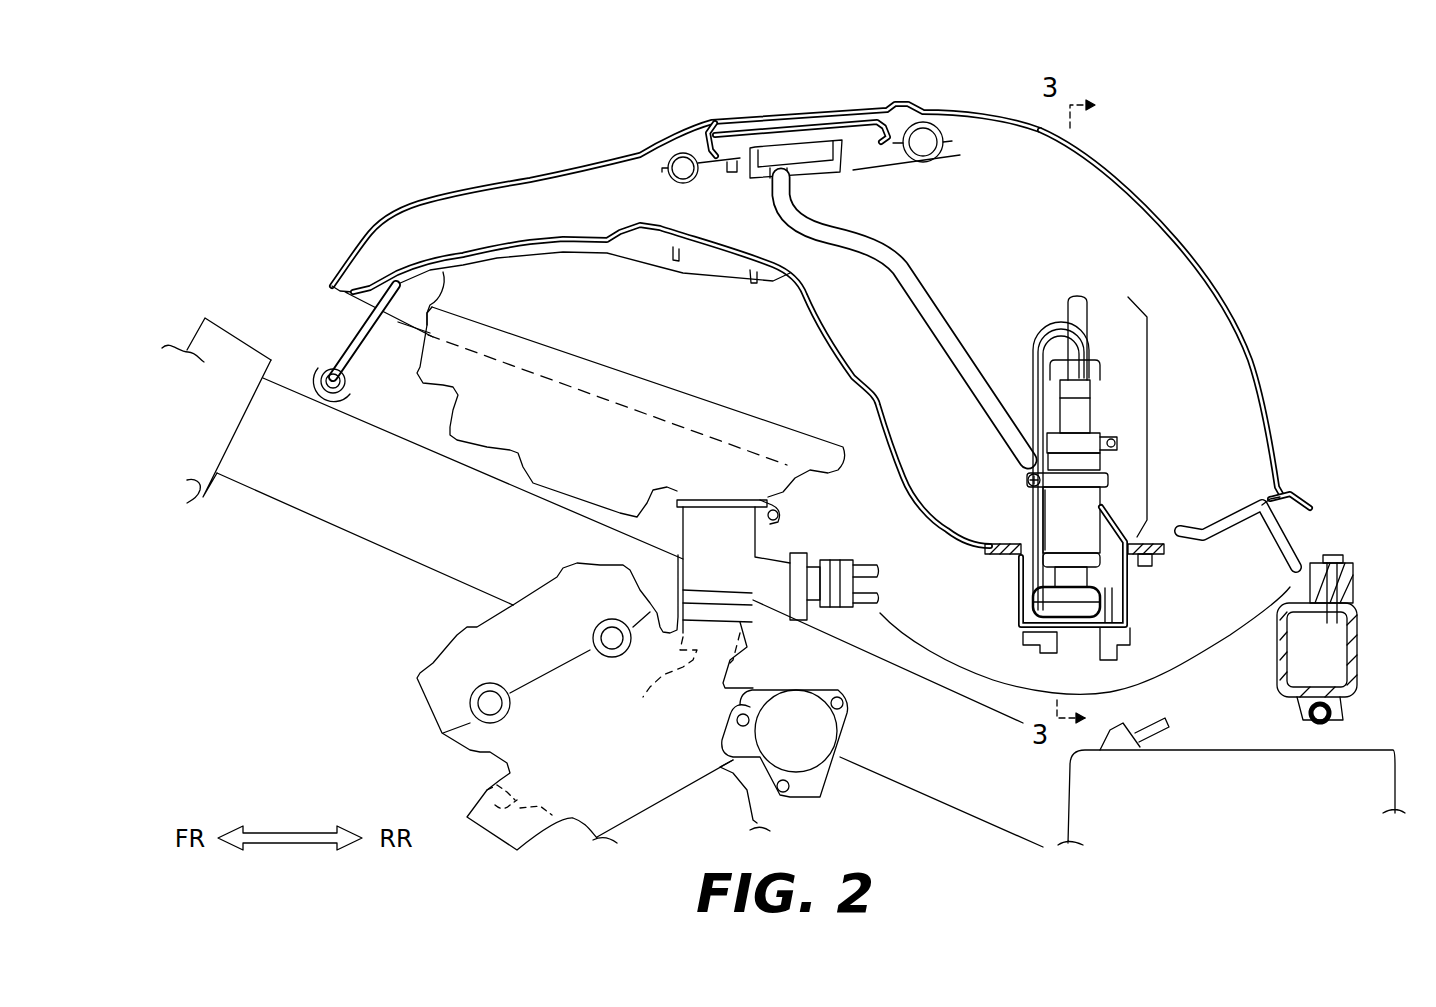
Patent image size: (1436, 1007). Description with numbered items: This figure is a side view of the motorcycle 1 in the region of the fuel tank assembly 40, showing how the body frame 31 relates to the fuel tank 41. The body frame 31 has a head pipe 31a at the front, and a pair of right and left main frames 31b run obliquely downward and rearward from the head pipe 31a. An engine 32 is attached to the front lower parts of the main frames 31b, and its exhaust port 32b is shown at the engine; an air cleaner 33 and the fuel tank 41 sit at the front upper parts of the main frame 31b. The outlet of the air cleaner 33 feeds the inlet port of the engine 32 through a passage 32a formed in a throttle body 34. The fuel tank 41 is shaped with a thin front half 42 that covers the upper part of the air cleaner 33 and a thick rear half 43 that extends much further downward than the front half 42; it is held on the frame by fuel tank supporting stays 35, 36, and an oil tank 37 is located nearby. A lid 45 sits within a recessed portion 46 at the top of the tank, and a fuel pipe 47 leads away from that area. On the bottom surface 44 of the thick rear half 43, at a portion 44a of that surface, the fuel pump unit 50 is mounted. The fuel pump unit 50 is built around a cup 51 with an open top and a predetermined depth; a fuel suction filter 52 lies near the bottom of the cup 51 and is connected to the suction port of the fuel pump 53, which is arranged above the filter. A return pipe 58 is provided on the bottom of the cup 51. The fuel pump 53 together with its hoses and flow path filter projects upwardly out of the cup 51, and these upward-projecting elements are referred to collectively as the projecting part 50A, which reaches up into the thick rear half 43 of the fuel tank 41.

The saddle-ride type vehicle 1 is at (300, 185).
The body frame 31 is at (602, 550).
The head pipe 31a is at (212, 325).
The main frame 31b is at (318, 503).
The engine 32 is at (605, 701).
The passage 32a is at (688, 645).
The exhaust port 32b is at (475, 790).
The air cleaner 33 is at (505, 430).
The throttle body 34 is at (713, 523).
The fuel tank supporting stay 35 is at (350, 338).
The fuel tank supporting stay 36 is at (1268, 537).
The oil tank 37 is at (1365, 770).
The fuel tank assembly 40 is at (837, 377).
The fuel tank 41 is at (442, 193).
The thin front half 42 is at (540, 205).
The thick rear half 43 is at (1103, 230).
The bottom surface 44 is at (978, 548).
The pump mounting portion 44a is at (1053, 513).
The lid 45 is at (794, 147).
The recessed portion 46 is at (878, 110).
The fuel pipe 47 is at (907, 270).
The fuel pump unit 50 is at (1045, 327).
The projecting part 50A is at (1076, 450).
The cup 51 is at (1025, 622).
The fuel suction filter 52 is at (1030, 591).
The fuel pump 53 is at (1030, 492).
The return pipe 58 is at (1118, 648).